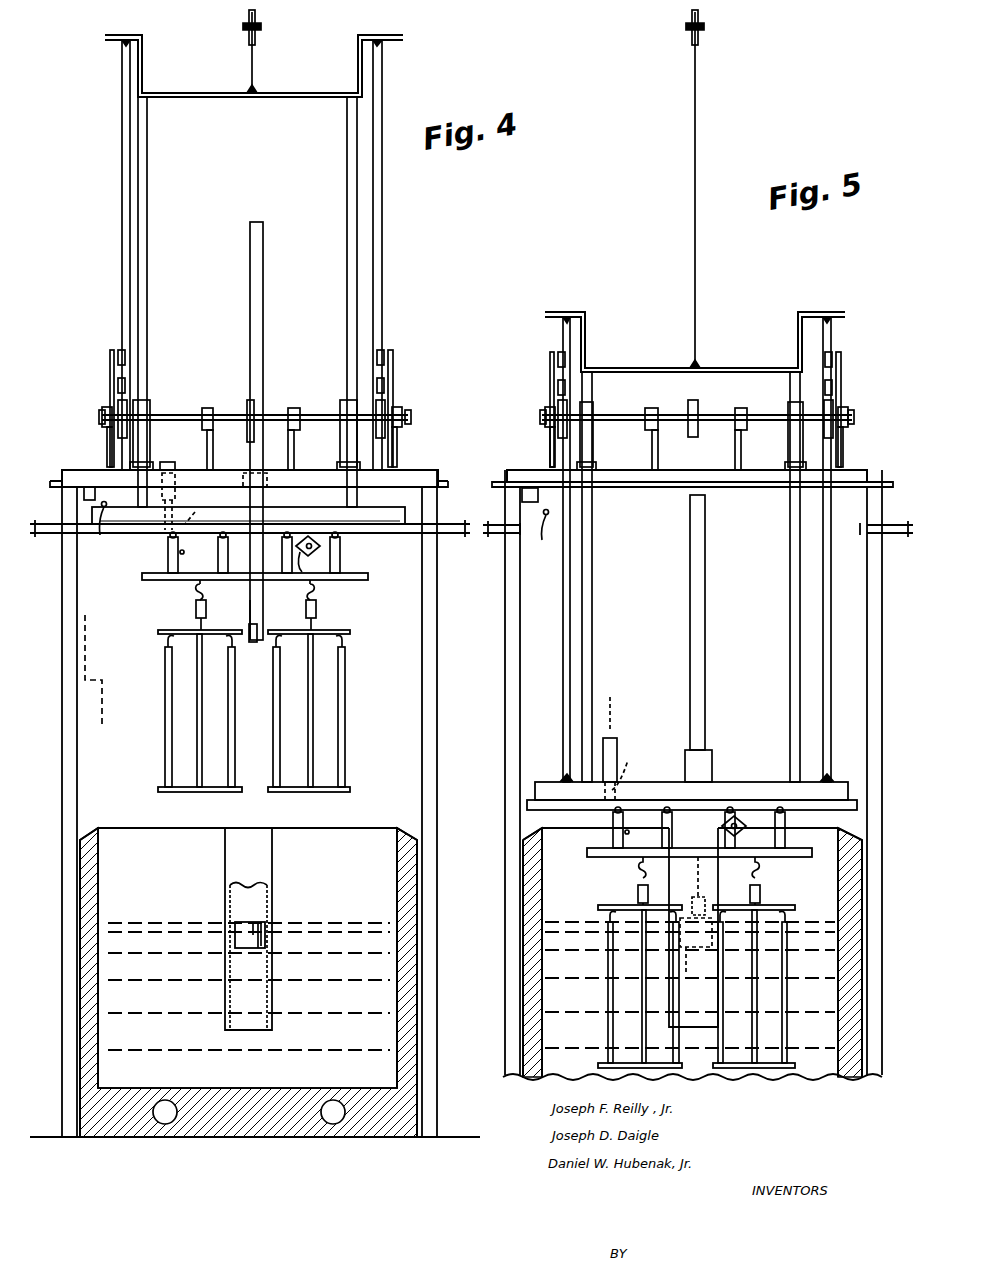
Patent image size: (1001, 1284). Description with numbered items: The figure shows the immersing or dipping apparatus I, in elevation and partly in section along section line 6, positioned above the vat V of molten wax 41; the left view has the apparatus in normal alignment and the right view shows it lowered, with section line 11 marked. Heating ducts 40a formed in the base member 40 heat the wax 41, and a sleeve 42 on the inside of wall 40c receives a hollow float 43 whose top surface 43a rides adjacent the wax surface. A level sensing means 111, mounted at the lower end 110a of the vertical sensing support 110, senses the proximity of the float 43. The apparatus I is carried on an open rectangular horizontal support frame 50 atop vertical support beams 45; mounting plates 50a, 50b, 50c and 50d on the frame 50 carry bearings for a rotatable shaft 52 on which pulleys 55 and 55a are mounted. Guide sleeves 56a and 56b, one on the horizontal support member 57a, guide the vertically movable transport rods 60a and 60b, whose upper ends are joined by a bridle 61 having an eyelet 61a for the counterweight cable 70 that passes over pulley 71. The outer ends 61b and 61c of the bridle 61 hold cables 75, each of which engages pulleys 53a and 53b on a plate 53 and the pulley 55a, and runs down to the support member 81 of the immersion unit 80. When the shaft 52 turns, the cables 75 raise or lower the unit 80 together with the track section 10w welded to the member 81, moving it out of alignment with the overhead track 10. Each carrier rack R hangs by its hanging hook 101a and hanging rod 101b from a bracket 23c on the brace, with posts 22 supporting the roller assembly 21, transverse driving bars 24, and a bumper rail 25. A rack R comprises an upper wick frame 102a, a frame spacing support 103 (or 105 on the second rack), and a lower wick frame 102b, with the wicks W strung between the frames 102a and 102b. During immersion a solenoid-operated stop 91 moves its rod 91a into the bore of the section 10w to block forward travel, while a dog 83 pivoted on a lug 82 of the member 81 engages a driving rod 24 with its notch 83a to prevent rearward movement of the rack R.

In FIG. 4, the section line 6- 6 is at (70, 22).
In FIG. 4, the overhead track 10 is at (50, 536).
In FIG. 5, the overhead track 10 is at (492, 536).
In FIG. 4, the track section 10w is at (385, 536).
In FIG. 5, the track section 10w is at (530, 800).
In FIG. 5, the section line 11- 11 is at (607, 713).
In FIG. 4, the carrier bar 21 is at (172, 530).
In FIG. 4, the posts 22 is at (178, 567).
In FIG. 5, the posts 22 is at (623, 819).
In FIG. 4, the hook 23c is at (196, 590).
In FIG. 4, the transverse driving bars 24 is at (184, 552).
In FIG. 5, the transverse driving bars 24 is at (629, 832).
In FIG. 4, the bumper or rail 25 is at (142, 575).
In FIG. 5, the bumper or rail 25 is at (590, 857).
In FIG. 4, the base member 40 is at (210, 1138).
In FIG. 5, the base member 40 is at (692, 954).
In FIG. 4, the heating ducts or conduits 40a is at (165, 1124).
In FIG. 4, the vat wall 40c is at (165, 842).
In FIG. 4, the molten wax 41 is at (338, 922).
In FIG. 5, the molten wax 41 is at (815, 923).
In FIG. 4, the sleeve 42 is at (250, 842).
In FIG. 5, the sleeve 42 is at (693, 927).
In FIG. 4, the float 43 is at (270, 925).
In FIG. 5, the float 43 is at (696, 953).
In FIG. 4, the float top surface 43a is at (250, 922).
In FIG. 4, the vertical support beams 45 is at (70, 752).
In FIG. 5, the vertical support beams 45 is at (693, 772).
In FIG. 4, the horizontal support frame 50 is at (408, 470).
In FIG. 5, the horizontal support frame 50 is at (632, 472).
In FIG. 4, the mounting plate 50a is at (402, 432).
In FIG. 5, the mounting plate 50a is at (848, 450).
In FIG. 4, the mounting plate 50b is at (290, 430).
In FIG. 5, the mounting plate 50b is at (747, 440).
In FIG. 4, the mounting plate 50c is at (207, 445).
In FIG. 5, the mounting plate 50c is at (658, 452).
In FIG. 4, the mounting plate 50d is at (102, 435).
In FIG. 5, the mounting plate 50d is at (545, 435).
In FIG. 4, the rotatable shaft 52 is at (160, 414).
In FIG. 5, the rotatable shaft 52 is at (633, 414).
In FIG. 4, the plate 53 is at (110, 360).
In FIG. 5, the plate 53 is at (550, 362).
In FIG. 4, the pulley 53a is at (118, 355).
In FIG. 5, the pulley 53a is at (558, 357).
In FIG. 4, the pulley 53b is at (118, 385).
In FIG. 5, the pulley 53b is at (558, 387).
In FIG. 4, the pulley 55 is at (248, 410).
In FIG. 5, the pulley 55 is at (698, 403).
In FIG. 4, the pulley 55a is at (118, 410).
In FIG. 5, the pulley 55a is at (558, 410).
In FIG. 4, the guide sleeve 56a is at (142, 400).
In FIG. 5, the guide sleeve 56a is at (593, 430).
In FIG. 4, the guide sleeve 56b is at (345, 400).
In FIG. 5, the guide sleeve 56b is at (788, 403).
In FIG. 4, the horizontal support member 57a is at (168, 462).
In FIG. 4, the transport rod 60a is at (147, 242).
In FIG. 5, the transport rod 60a is at (592, 578).
In FIG. 4, the transport rod 60b is at (347, 157).
In FIG. 5, the transport rod 60b is at (790, 565).
In FIG. 4, the bridle 61 is at (192, 97).
In FIG. 5, the bridle 61 is at (628, 368).
In FIG. 4, the eyelet 61a is at (256, 92).
In FIG. 5, the eyelet 61a is at (695, 364).
In FIG. 4, the bridle outer end 61b is at (118, 36).
In FIG. 4, the bridle outer end 61c is at (370, 36).
In FIG. 4, the cable 70 is at (257, 57).
In FIG. 5, the cable 70 is at (700, 100).
In FIG. 4, the pulley 71 is at (262, 27).
In FIG. 5, the pulley 71 is at (700, 38).
In FIG. 4, the cables 75 is at (122, 205).
In FIG. 5, the cables 75 is at (563, 328).
In FIG. 4, the immersion unit 80 is at (385, 526).
In FIG. 4, the support member 81 is at (275, 514).
In FIG. 5, the support member 81 is at (755, 782).
In FIG. 4, the lug 82 is at (314, 540).
In FIG. 4, the dog 83 is at (305, 551).
In FIG. 5, the notch 83a is at (738, 816).
In FIG. 4, the solenoid-operated stop 91 is at (175, 497).
In FIG. 4, the stop rod 91a is at (196, 511).
In FIG. 5, the stop rod 91a is at (622, 780).
In FIG. 4, the hanging hook 101a is at (195, 607).
In FIG. 5, the hanging hook 101a is at (699, 881).
In FIG. 4, the hanging rod 101b is at (197, 640).
In FIG. 4, the upper wick frame 102a is at (158, 634).
In FIG. 5, the upper wick frame 102a is at (608, 905).
In FIG. 4, the lower wick frame 102b is at (158, 788).
In FIG. 4, the frame spacing support 103 is at (197, 722).
In FIG. 4, the right rack rods 105 is at (280, 714).
In FIG. 5, the right rack rods 105 is at (608, 998).
In FIG. 4, the vertical sensing means support 110 is at (263, 275).
In FIG. 5, the vertical sensing means support 110 is at (705, 648).
In FIG. 4, the lower end of sensing support 110a is at (257, 607).
In FIG. 4, the level sensing means 111 is at (253, 643).
In FIG. 5, the level sensing means 111 is at (706, 900).
In FIG. 4, the immersing or dipping apparatus I is at (405, 290).
In FIG. 4, the carrier rack R is at (162, 680).
In FIG. 5, the carrier rack R is at (586, 848).
In FIG. 4, the vat V is at (412, 1000).
In FIG. 5, the vat V is at (532, 878).
In FIG. 4, the wicks W is at (200, 655).
In FIG. 5, the wicks W is at (608, 915).